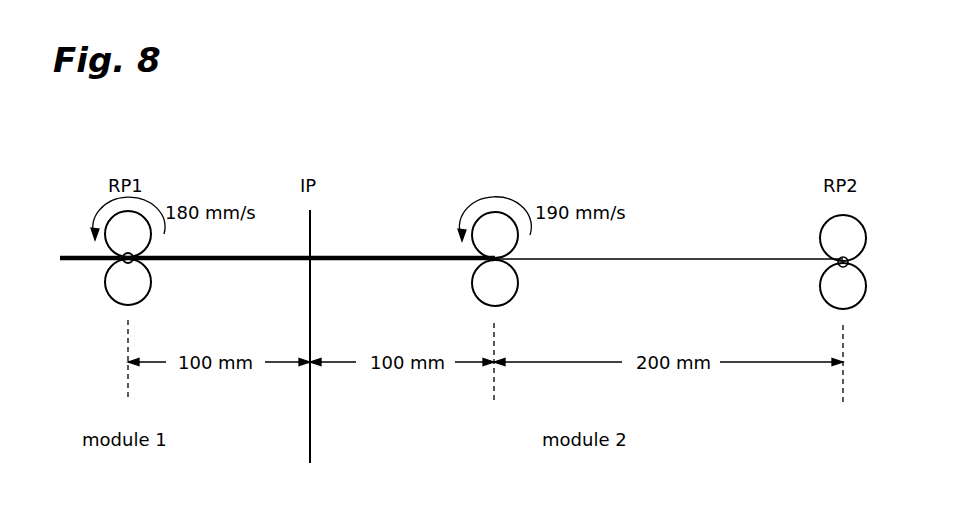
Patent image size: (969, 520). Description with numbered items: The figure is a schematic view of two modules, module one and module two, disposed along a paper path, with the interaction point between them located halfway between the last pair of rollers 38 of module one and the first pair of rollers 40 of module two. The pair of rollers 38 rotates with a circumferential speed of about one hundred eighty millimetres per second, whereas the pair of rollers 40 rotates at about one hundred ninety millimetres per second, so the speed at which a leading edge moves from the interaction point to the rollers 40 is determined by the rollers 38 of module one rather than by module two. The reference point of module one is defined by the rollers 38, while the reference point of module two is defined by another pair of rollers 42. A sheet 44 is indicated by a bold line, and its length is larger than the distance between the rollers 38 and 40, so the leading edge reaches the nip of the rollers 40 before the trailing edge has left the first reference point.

The last pair of rollers of module 1 38 is at (152, 285).
The first pair of rollers of module 2 40 is at (518, 286).
The pair of rollers 42 is at (818, 285).
The sheet 44 is at (353, 258).